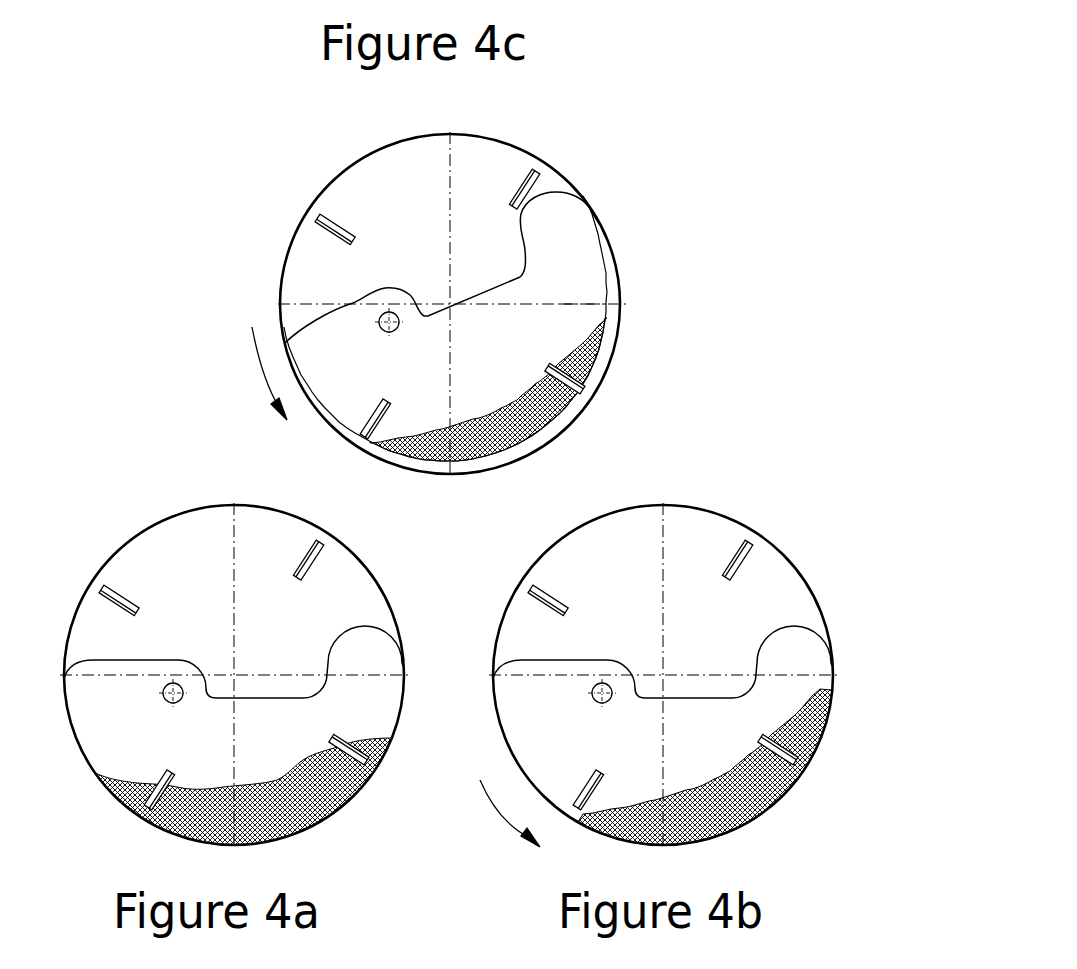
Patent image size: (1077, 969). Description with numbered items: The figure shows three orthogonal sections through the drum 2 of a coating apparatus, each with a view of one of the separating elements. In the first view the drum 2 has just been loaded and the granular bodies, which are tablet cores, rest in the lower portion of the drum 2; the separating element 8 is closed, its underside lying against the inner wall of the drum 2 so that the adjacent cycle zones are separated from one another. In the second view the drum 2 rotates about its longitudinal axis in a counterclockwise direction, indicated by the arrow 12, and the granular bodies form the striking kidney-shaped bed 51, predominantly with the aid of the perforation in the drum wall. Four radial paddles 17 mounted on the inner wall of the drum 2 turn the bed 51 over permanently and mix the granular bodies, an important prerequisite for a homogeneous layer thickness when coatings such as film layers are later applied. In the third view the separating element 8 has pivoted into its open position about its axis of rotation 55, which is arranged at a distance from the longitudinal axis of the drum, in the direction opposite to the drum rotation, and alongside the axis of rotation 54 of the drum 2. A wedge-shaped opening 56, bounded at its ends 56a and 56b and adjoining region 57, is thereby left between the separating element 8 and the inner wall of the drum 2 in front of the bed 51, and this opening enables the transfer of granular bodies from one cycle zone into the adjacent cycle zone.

In FIG. 4C, the drum 2 is at (350, 167).
In FIG. 4A, the drum 2 is at (157, 522).
In FIG. 4B, the drum 2 is at (690, 507).
In FIG. 4C, the separating element 8 is at (573, 220).
In FIG. 4A, the separating element 8 is at (365, 647).
In FIG. 4B, the separating element 8 is at (795, 648).
In FIG. 4C, the arrow 12 is at (255, 373).
In FIG. 4B, the arrow 12 is at (505, 813).
In FIG. 4C, the radial paddles 17 is at (532, 168).
In FIG. 4A, the radial paddles 17 is at (122, 592).
In FIG. 4B, the radial paddles 17 is at (748, 545).
In FIG. 4C, the bed 51 is at (495, 420).
In FIG. 4A, the bed 51 is at (243, 791).
In FIG. 4B, the bed 51 is at (740, 827).
In FIG. 4C, the axis of rotation of the drum 54 is at (379, 325).
In FIG. 4A, the axis of rotation of the drum 54 is at (163, 697).
In FIG. 4B, the axis of rotation of the drum 54 is at (592, 697).
In FIG. 4C, the axis of rotation of the separating element 55 is at (458, 300).
In FIG. 4A, the axis of rotation of the separating element 55 is at (237, 667).
In FIG. 4B, the axis of rotation of the separating element 55 is at (666, 667).
In FIG. 4C, the wedge-shaped opening 56 is at (543, 453).
In FIG. 4C, the liner end 56a is at (347, 440).
In FIG. 4C, the liner end 56b is at (610, 308).
In FIG. 4C, the gap between drum and liner 57 is at (572, 300).